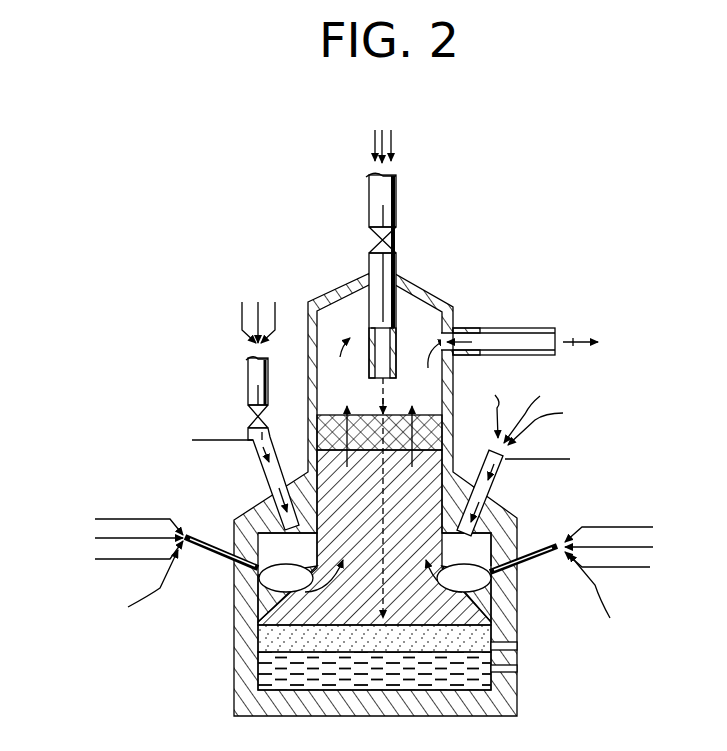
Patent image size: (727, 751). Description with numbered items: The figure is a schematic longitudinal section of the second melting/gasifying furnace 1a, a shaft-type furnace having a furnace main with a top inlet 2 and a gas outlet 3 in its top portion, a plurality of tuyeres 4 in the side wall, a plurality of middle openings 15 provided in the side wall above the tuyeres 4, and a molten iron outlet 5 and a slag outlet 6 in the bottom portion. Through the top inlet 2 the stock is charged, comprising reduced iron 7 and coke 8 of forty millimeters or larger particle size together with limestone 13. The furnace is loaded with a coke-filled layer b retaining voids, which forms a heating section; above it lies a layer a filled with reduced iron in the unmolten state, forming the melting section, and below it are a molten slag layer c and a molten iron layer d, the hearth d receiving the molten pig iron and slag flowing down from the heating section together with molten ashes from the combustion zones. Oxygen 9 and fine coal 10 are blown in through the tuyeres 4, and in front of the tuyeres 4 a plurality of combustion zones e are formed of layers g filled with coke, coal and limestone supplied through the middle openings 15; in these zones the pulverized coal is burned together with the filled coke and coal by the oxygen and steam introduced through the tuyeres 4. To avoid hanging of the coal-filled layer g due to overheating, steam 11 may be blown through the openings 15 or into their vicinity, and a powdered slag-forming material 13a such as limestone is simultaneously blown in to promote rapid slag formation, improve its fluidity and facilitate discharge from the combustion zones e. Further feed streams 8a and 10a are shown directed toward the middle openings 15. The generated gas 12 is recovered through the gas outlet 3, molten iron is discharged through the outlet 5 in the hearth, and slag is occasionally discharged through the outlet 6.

The second melting/gasifying furnace 1a is at (510, 508).
The top inlet 2 is at (369, 270).
The gas outlet 3 is at (520, 328).
The tuyeres 4 is at (213, 547).
The molten iron outlet 5 is at (517, 668).
The slag outlet 6 is at (517, 646).
The reduced iron 7 is at (375, 130).
The coke 8 is at (391, 130).
The flux feed to side tube 8a is at (275, 302).
The oxygen 9 is at (95, 559).
The fine coal 10 is at (95, 538).
The reducing agent feed to side tube 10a is at (242, 302).
The steam 11 is at (196, 440).
The generated gas 12 is at (580, 338).
The limestone 13 is at (382, 130).
The slag-forming material 13a is at (364, 595).
The middle openings 15 is at (258, 468).
The reduced iron layer a is at (375, 443).
The coke-filled layer b is at (357, 513).
The molten slag layer c is at (258, 640).
The molten iron layer d is at (372, 682).
The combustion zones e is at (262, 590).
The coal-filled layer g is at (283, 558).